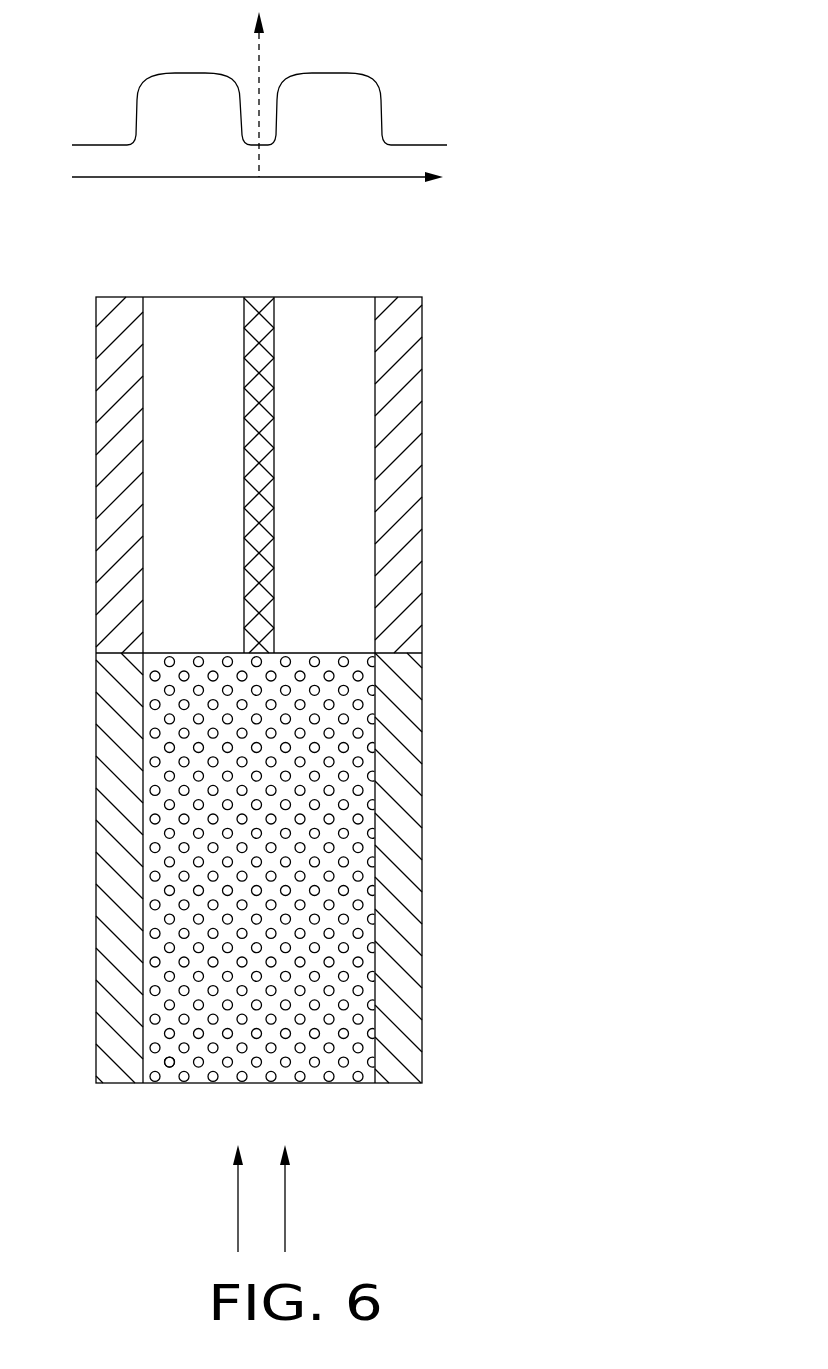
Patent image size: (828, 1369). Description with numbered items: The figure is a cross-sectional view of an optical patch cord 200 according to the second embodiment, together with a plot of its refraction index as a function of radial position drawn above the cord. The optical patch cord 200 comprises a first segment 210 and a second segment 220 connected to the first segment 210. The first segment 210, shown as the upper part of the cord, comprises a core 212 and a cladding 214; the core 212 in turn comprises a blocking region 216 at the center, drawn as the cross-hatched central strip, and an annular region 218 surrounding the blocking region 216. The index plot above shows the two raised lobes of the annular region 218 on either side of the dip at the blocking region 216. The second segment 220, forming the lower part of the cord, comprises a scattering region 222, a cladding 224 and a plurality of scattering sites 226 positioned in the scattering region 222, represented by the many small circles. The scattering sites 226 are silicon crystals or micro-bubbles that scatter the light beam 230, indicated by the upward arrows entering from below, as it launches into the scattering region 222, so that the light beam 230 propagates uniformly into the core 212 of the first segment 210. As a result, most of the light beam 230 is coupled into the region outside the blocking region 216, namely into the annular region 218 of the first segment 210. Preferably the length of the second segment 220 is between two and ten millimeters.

The optical patch cord 200 is at (557, 450).
The first segment 210 is at (327, 449).
The core 212 is at (320, 247).
The cladding 214 is at (407, 297).
The blocking region 216 is at (268, 297).
The annular region 218 is at (198, 297).
The second segment 220 is at (329, 900).
The scattering region 222 is at (343, 1078).
The cladding 224 is at (407, 1043).
The scattering sites 226 is at (170, 1068).
The light beam 230 is at (285, 1207).